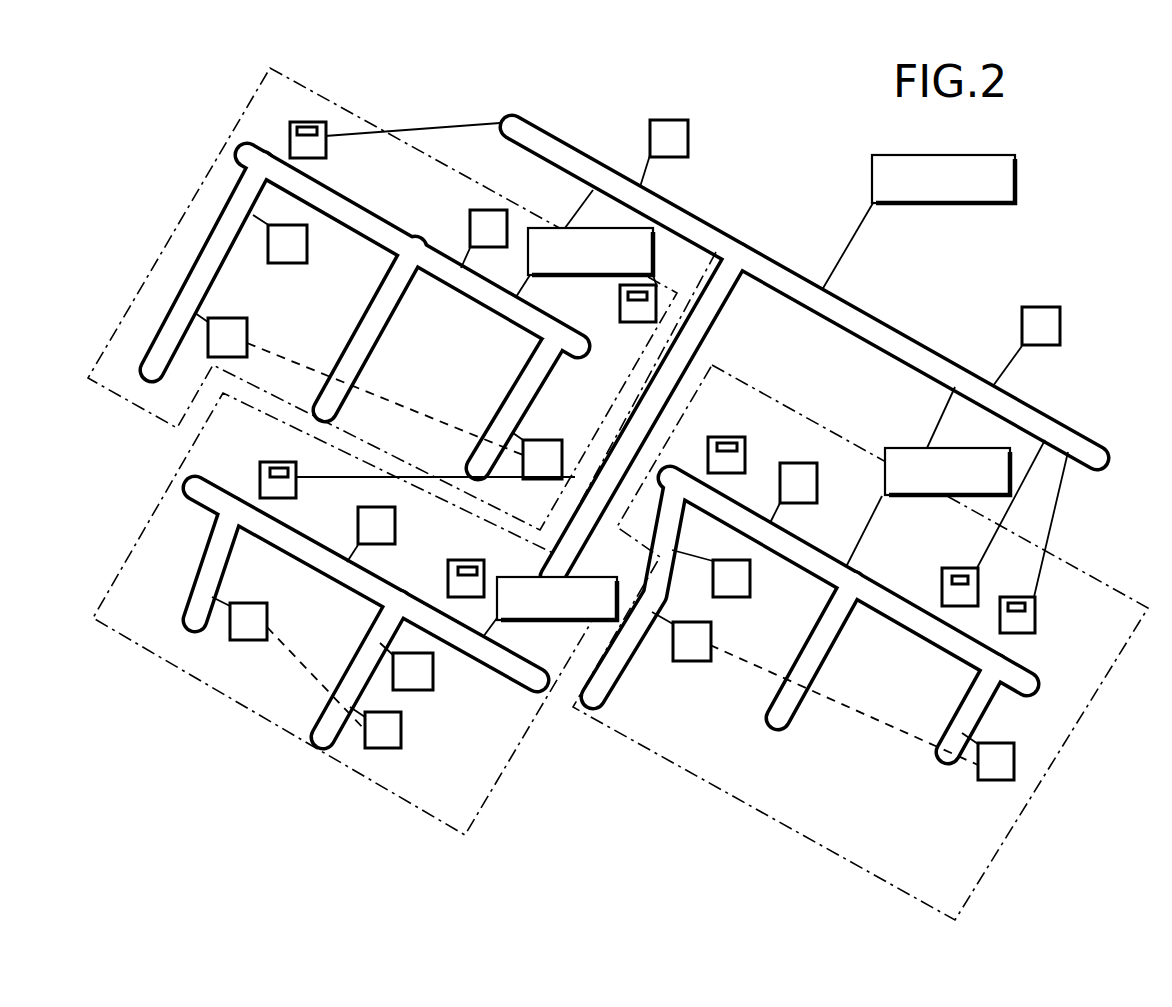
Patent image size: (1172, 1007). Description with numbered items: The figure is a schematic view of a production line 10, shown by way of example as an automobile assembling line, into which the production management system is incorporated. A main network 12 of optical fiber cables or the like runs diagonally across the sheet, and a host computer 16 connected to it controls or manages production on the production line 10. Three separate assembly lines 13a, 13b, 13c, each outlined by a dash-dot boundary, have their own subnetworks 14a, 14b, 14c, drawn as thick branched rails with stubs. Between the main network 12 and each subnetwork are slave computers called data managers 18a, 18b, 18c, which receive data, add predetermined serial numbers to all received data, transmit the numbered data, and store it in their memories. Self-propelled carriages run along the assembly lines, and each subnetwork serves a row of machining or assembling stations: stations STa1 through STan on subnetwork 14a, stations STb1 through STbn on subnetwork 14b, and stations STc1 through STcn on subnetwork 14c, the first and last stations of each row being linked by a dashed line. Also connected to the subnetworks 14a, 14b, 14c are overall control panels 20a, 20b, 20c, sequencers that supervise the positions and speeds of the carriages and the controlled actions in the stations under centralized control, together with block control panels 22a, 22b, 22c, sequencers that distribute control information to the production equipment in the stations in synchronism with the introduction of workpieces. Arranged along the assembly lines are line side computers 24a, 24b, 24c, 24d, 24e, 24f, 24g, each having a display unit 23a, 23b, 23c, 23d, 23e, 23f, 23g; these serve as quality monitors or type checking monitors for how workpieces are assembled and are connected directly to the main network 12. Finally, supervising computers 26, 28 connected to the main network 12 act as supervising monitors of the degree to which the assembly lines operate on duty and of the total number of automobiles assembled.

The production line 10 is at (733, 158).
The main network 12 is at (898, 327).
The assembly line 13a is at (1104, 582).
The assembly line 13b is at (248, 712).
The assembly line 13c is at (168, 240).
The subnetwork 14a is at (917, 632).
The subnetwork 14b is at (527, 687).
The subnetwork 14c is at (262, 156).
The host computer 16 is at (893, 155).
The data manager 18a is at (910, 447).
The data manager 18b is at (513, 620).
The data manager 18c is at (560, 227).
The overall control panel 20a is at (820, 477).
The overall control panel 20b is at (395, 520).
The overall control panel 20c is at (470, 220).
The block control panel 22a is at (750, 583).
The block control panel 22b is at (433, 668).
The block control panel 22c is at (308, 243).
The display unit 23a is at (1013, 603).
The display unit 23b is at (958, 576).
The display unit 23c is at (745, 447).
The display unit 23d is at (462, 572).
The display unit 23e is at (283, 480).
The display unit 23f is at (628, 296).
The display unit 23g is at (313, 125).
The line side computer 24a is at (1035, 623).
The line side computer 24b is at (942, 590).
The line side computer 24c is at (720, 437).
The line side computer 24d is at (448, 568).
The line side computer 24e is at (262, 473).
The line side computer 24f is at (627, 323).
The line side computer 24g is at (315, 158).
The supervising computer 26 is at (1035, 307).
The supervising computer 28 is at (650, 133).
The machining station STcn is at (248, 335).
The machining station STc1 is at (553, 437).
The machining station STan is at (695, 662).
The machining station STa1 is at (987, 780).
The machining station STbn is at (253, 640).
The machining station STb1 is at (393, 748).